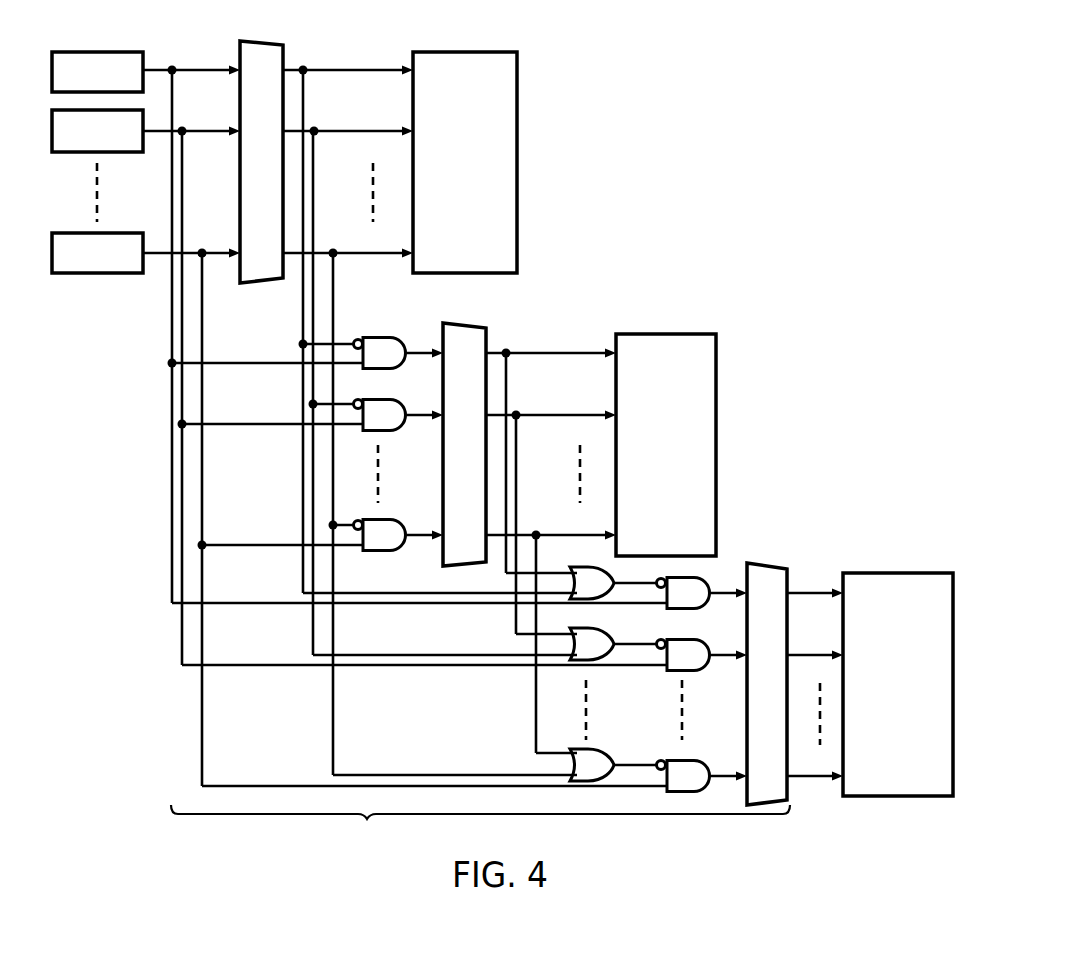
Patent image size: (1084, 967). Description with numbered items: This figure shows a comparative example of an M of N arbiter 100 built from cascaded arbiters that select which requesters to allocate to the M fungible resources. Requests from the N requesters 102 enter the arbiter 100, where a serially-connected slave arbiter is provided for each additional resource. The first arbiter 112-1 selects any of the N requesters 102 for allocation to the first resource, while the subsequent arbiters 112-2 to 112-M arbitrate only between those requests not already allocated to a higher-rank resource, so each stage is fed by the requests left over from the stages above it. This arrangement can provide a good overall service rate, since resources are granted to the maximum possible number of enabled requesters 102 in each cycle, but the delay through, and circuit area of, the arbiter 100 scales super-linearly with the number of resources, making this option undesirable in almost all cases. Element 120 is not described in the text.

The M of N arbiter 100 is at (480, 829).
The requesters 102 is at (94, 60).
The arbiter 120 is at (265, 60).
The first arbiter 112-1 is at (490, 102).
The second arbiter 112-2 is at (695, 383).
The M-th arbiter 112-M is at (887, 593).